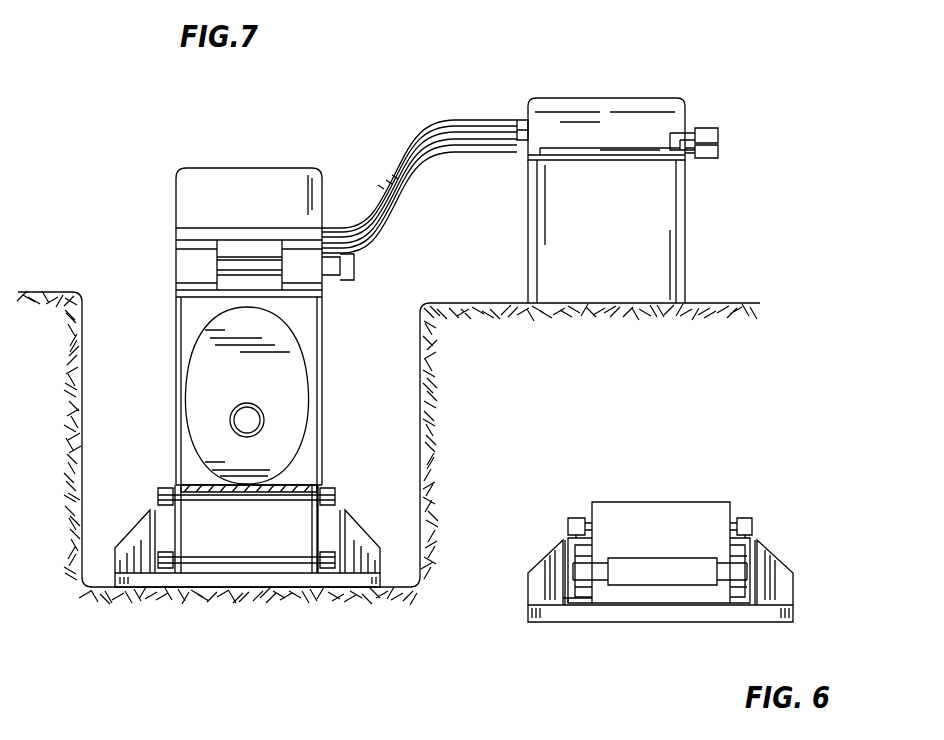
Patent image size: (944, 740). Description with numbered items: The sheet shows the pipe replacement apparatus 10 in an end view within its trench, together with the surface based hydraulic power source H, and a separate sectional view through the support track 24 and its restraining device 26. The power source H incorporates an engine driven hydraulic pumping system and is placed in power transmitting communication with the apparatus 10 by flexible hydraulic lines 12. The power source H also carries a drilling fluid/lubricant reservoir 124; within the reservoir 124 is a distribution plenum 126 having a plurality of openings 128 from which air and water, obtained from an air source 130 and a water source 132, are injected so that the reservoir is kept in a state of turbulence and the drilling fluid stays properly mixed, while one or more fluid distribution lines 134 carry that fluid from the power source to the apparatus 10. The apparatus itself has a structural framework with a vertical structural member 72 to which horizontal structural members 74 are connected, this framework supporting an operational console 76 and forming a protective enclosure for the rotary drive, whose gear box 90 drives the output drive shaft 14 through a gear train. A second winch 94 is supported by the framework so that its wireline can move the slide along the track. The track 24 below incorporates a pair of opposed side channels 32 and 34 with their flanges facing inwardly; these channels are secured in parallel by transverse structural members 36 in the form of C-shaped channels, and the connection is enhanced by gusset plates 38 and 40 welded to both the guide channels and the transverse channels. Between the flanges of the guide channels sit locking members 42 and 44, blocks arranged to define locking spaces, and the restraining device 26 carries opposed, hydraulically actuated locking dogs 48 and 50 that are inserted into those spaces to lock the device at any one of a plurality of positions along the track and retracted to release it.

In FIG. 7, the pipe replacement apparatus 10 is at (168, 160).
In FIG. 7, the flexible hydraulic lines 12 is at (474, 150).
In FIG. 7, the drive shaft 14 is at (265, 420).
In FIG. 6, the support track 24 is at (560, 532).
In FIG. 6, the restraining device 26 is at (672, 502).
In FIG. 7, the side channel 32 is at (340, 522).
In FIG. 6, the side channel 32 is at (765, 565).
In FIG. 7, the side channel 34 is at (150, 530).
In FIG. 6, the side channel 34 is at (562, 598).
In FIG. 7, the transverse structural members 36 is at (228, 587).
In FIG. 6, the transverse structural members 36 is at (680, 622).
In FIG. 7, the gusset plate 38 is at (380, 562).
In FIG. 6, the gusset plate 38 is at (790, 590).
In FIG. 7, the gusset plate 40 is at (118, 560).
In FIG. 6, the gusset plate 40 is at (535, 583).
In FIG. 6, the locking members 42 is at (568, 550).
In FIG. 6, the locking members 44 is at (757, 540).
In FIG. 6, the locking dog 48 is at (600, 565).
In FIG. 6, the locking dog 50 is at (725, 565).
In FIG. 7, the vertical structural member 72 is at (318, 457).
In FIG. 7, the horizontal structural members 74 is at (215, 230).
In FIG. 7, the operational console 76 is at (284, 178).
In FIG. 7, the gear box 90 is at (288, 363).
In FIG. 7, the second winch 94 is at (190, 262).
In FIG. 7, the drilling fluid/lubricant reservoir 124 is at (575, 130).
In FIG. 7, the distribution plenum 126 is at (596, 157).
In FIG. 7, the openings 128 is at (658, 152).
In FIG. 7, the air source 130 is at (708, 128).
In FIG. 7, the water source 132 is at (710, 160).
In FIG. 7, the fluid distribution lines 134 is at (471, 128).
In FIG. 7, the hydraulic power source H is at (614, 103).